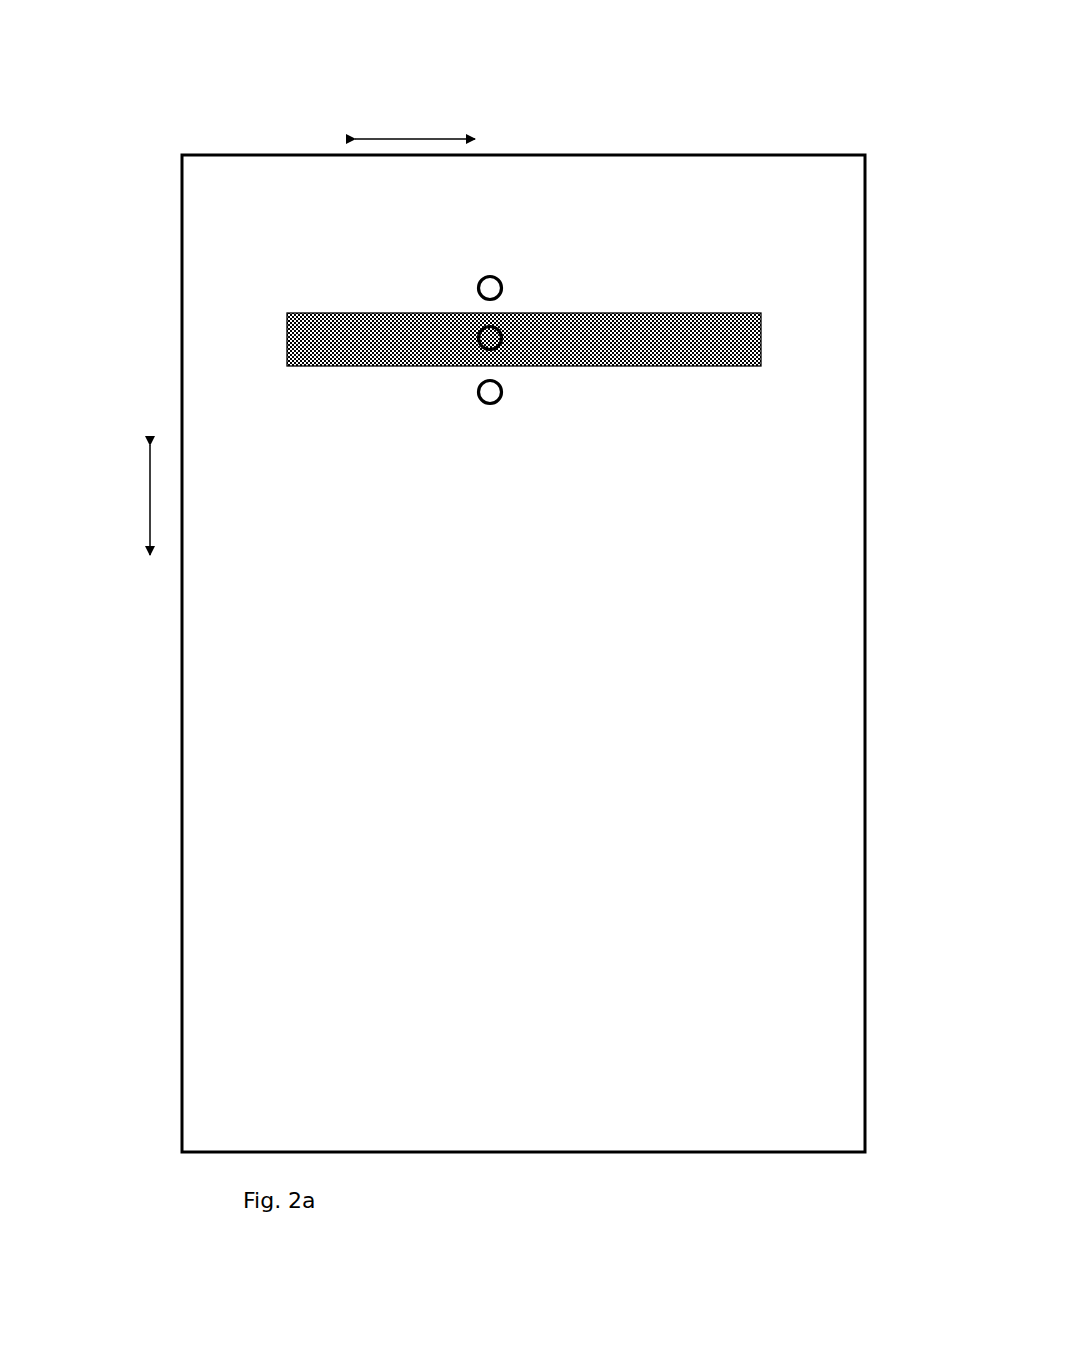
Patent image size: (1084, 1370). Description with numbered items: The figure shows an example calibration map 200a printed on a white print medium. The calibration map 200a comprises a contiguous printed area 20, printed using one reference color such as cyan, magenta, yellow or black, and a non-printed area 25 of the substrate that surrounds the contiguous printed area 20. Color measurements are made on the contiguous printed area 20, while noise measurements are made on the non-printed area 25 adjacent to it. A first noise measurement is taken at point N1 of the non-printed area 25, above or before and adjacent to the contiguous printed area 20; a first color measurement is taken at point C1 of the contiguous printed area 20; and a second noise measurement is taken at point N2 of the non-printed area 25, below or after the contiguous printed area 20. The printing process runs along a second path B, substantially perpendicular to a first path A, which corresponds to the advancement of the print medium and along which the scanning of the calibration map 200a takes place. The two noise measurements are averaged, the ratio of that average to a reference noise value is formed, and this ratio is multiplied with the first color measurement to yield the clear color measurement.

The calibration map 200a is at (195, 117).
The non-printed area 25 is at (230, 233).
The contiguous printed area 20 is at (287, 313).
The first noise measurement point N1 is at (482, 279).
The first color measurement point C1 is at (481, 328).
The second noise measurement point N2 is at (479, 404).
The first path A is at (133, 500).
The second path B is at (415, 121).